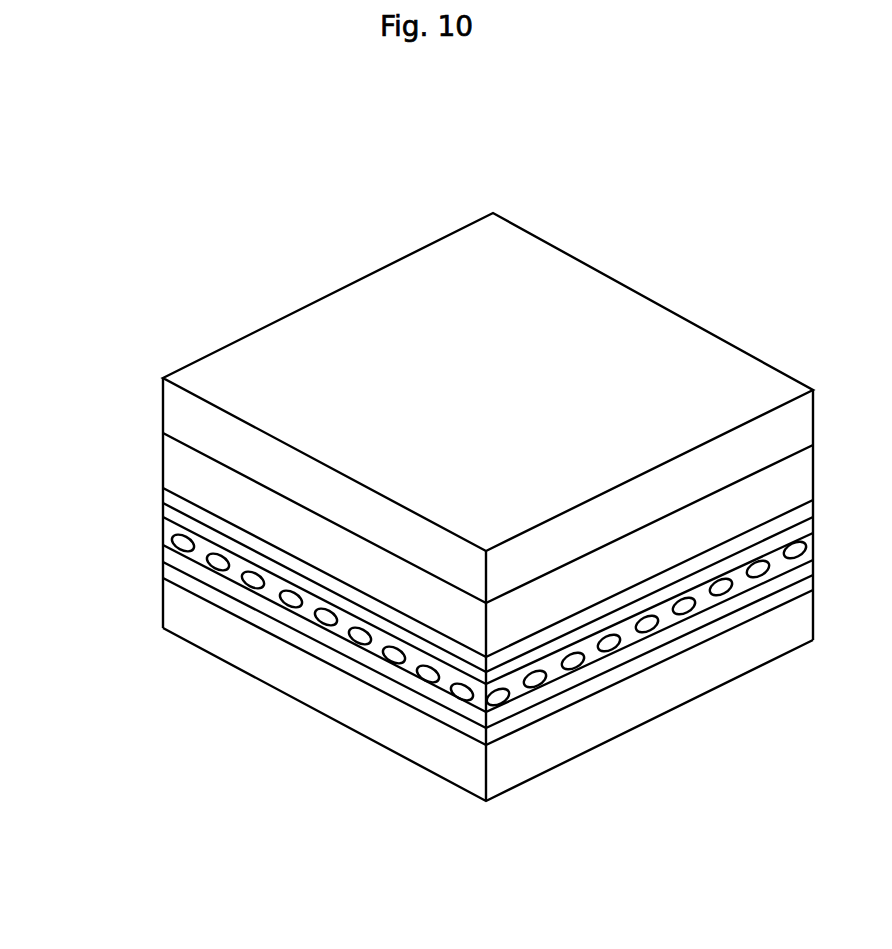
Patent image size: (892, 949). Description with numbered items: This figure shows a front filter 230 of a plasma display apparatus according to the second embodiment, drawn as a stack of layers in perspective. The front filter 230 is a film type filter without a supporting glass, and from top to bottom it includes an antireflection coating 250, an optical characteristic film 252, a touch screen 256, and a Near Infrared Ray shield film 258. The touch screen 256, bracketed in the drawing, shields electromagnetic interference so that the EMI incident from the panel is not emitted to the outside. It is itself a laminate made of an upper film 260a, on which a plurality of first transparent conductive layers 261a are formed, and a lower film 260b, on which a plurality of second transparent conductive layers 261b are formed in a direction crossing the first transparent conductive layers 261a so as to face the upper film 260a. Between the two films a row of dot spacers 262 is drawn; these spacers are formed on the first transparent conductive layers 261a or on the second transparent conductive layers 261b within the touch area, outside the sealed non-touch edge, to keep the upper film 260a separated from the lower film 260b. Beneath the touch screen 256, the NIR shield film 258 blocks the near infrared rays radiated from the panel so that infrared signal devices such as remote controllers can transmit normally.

The front filter 230 is at (92, 177).
The antireflection coating 250 is at (163, 411).
The optical characteristic film 252 is at (163, 463).
The touch screen 256 is at (60, 465).
The upper film 260a is at (163, 488).
The first transparent conductive layers 261a is at (163, 508).
The dot spacers 262 is at (163, 535).
The second transparent conductive layers 261b is at (160, 555).
The lower film 260b is at (160, 570).
The NIR shield film 258 is at (167, 608).